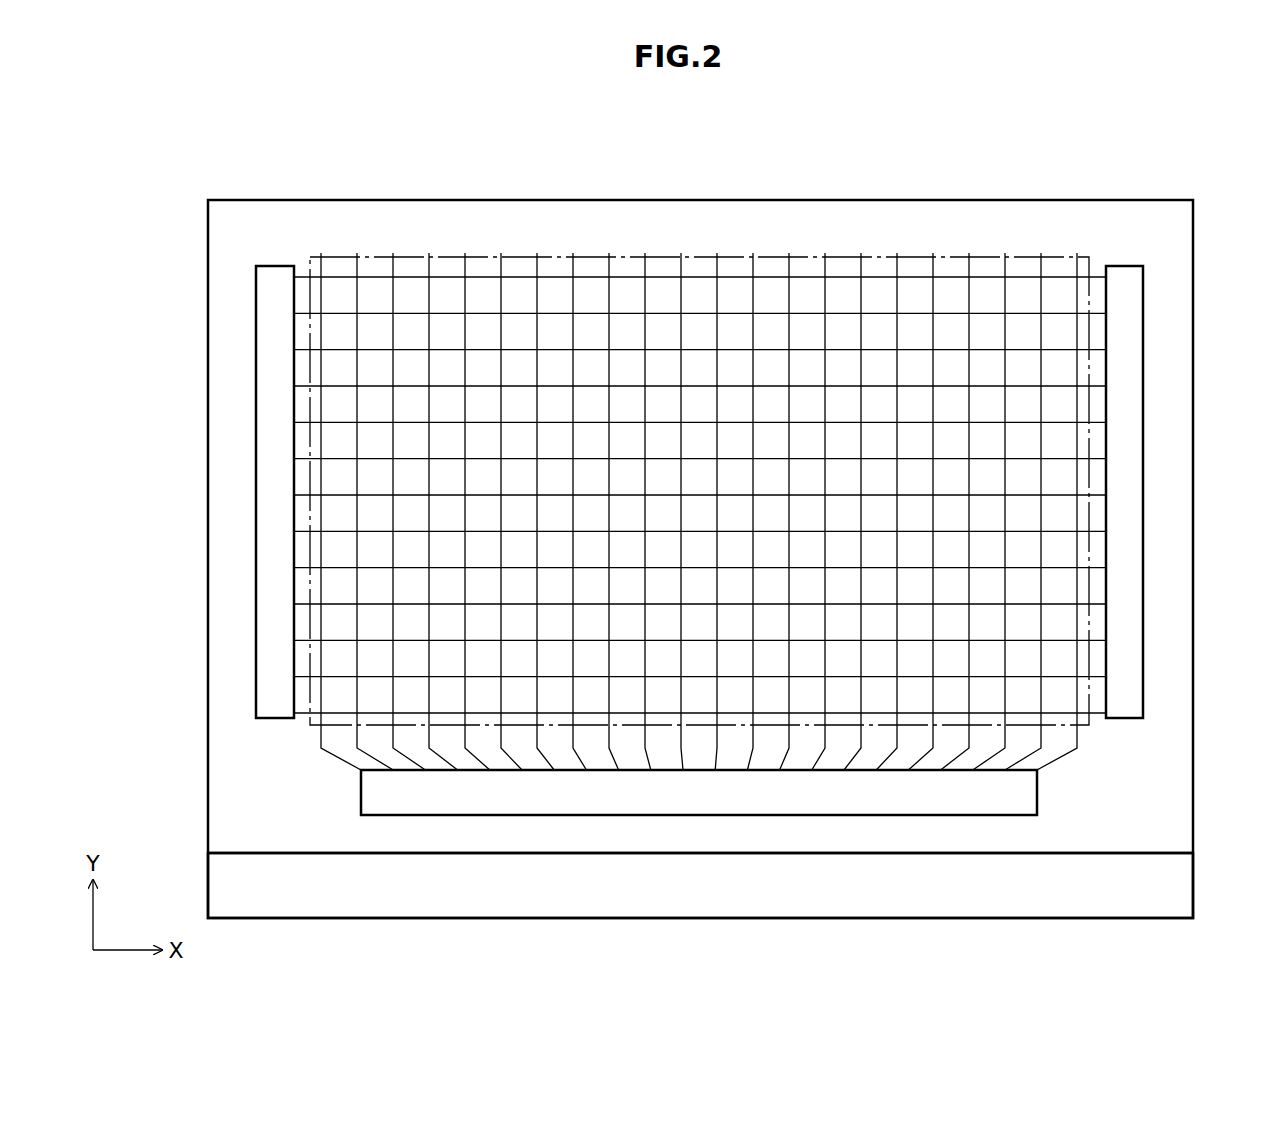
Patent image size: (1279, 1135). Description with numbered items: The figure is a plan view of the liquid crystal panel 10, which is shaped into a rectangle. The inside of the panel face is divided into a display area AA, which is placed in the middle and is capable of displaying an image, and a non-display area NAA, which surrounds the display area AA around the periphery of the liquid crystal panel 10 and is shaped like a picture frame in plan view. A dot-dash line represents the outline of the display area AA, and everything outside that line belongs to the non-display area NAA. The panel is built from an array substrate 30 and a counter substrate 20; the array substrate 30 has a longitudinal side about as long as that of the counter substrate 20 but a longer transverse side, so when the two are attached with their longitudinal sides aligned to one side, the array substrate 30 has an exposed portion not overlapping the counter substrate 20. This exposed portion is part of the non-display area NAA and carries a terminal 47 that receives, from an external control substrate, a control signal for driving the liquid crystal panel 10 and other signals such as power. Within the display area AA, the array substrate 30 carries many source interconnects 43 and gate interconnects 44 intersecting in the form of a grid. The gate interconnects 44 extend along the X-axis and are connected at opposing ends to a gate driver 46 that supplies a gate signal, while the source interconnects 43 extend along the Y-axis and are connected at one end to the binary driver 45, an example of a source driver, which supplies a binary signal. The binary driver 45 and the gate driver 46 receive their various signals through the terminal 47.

The liquid crystal panel 10 is at (628, 158).
The counter substrate 20 is at (223, 236).
The array substrate 30 is at (223, 873).
The source interconnects 43 is at (466, 300).
The gate interconnects 44 is at (411, 277).
The binary driver 45 is at (1020, 793).
The gate driver 46 is at (1123, 283).
The terminal 47 is at (1170, 888).
The display area AA is at (807, 272).
The non-display area NAA is at (909, 225).